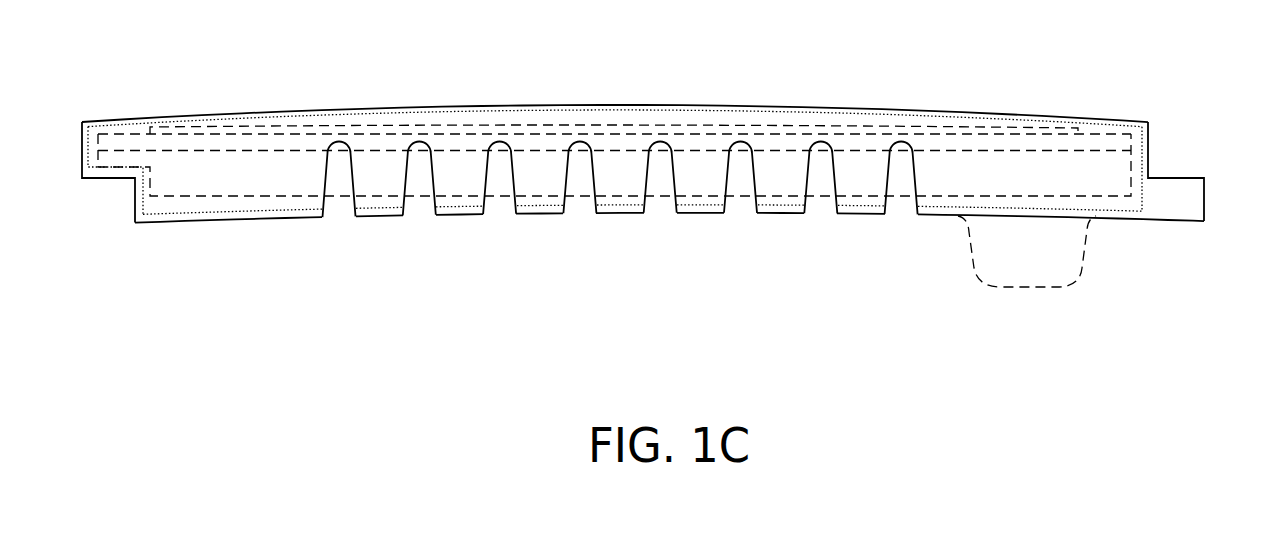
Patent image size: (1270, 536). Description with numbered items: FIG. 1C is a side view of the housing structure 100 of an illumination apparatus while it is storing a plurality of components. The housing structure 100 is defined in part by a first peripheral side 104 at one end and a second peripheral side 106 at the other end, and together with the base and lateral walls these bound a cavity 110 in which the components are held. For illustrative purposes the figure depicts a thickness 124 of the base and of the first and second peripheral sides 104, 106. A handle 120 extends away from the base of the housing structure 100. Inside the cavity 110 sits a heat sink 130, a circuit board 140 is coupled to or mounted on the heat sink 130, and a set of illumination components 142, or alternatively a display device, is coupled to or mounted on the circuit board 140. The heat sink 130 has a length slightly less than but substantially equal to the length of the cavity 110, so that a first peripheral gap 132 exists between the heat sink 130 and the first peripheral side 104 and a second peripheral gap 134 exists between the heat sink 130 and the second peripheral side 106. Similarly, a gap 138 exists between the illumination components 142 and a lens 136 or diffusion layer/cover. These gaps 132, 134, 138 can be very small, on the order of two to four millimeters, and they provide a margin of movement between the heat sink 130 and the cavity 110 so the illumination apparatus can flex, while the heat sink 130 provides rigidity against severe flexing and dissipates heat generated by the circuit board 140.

The housing structure 100 is at (1098, 71).
The first peripheral side 104 is at (80, 160).
The second peripheral side 106 is at (1153, 147).
The cavity 110 is at (575, 118).
The handle 120 is at (973, 248).
The thickness 124 is at (242, 215).
The heat sink 130 is at (262, 183).
The first peripheral gap 132 is at (95, 140).
The second peripheral gap 134 is at (1135, 142).
The lens 136 is at (325, 110).
The gap 138 is at (223, 123).
The circuit board 140 is at (972, 142).
The illumination components 142 is at (810, 128).